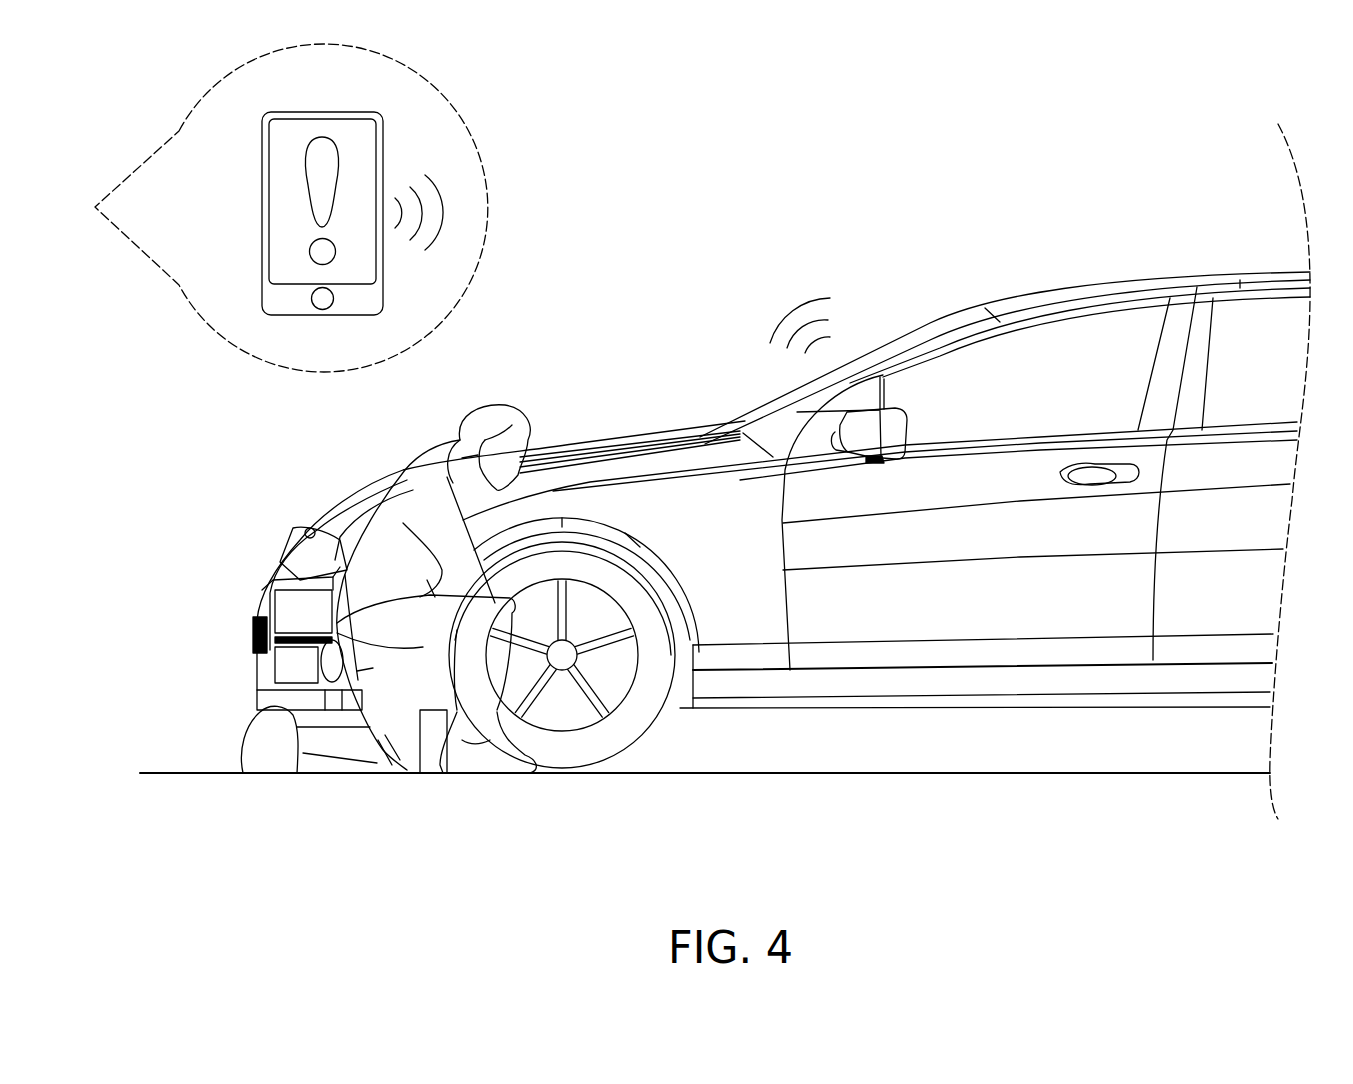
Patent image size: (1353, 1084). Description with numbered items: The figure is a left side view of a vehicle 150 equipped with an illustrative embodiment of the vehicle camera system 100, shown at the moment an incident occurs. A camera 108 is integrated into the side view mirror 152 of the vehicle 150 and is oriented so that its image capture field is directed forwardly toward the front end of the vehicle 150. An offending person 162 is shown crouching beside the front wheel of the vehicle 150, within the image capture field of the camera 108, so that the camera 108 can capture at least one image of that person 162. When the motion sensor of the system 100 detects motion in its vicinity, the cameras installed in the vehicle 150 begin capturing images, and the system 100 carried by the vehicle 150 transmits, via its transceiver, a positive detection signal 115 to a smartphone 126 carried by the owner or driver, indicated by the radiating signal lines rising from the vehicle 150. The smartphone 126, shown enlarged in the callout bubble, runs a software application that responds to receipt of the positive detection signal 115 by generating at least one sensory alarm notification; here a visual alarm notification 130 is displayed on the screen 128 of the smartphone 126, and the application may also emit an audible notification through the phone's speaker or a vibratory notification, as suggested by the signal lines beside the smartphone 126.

The vehicle camera system 100 is at (846, 473).
The second camera 108 is at (872, 458).
The positive detection signal 115 is at (778, 318).
The smartphone 126 is at (262, 187).
The screen 128 is at (287, 258).
The visual alarm notification 130 is at (341, 143).
The vehicle 150 is at (1016, 295).
The side view mirror 152 is at (906, 430).
The offending person 162 is at (435, 467).